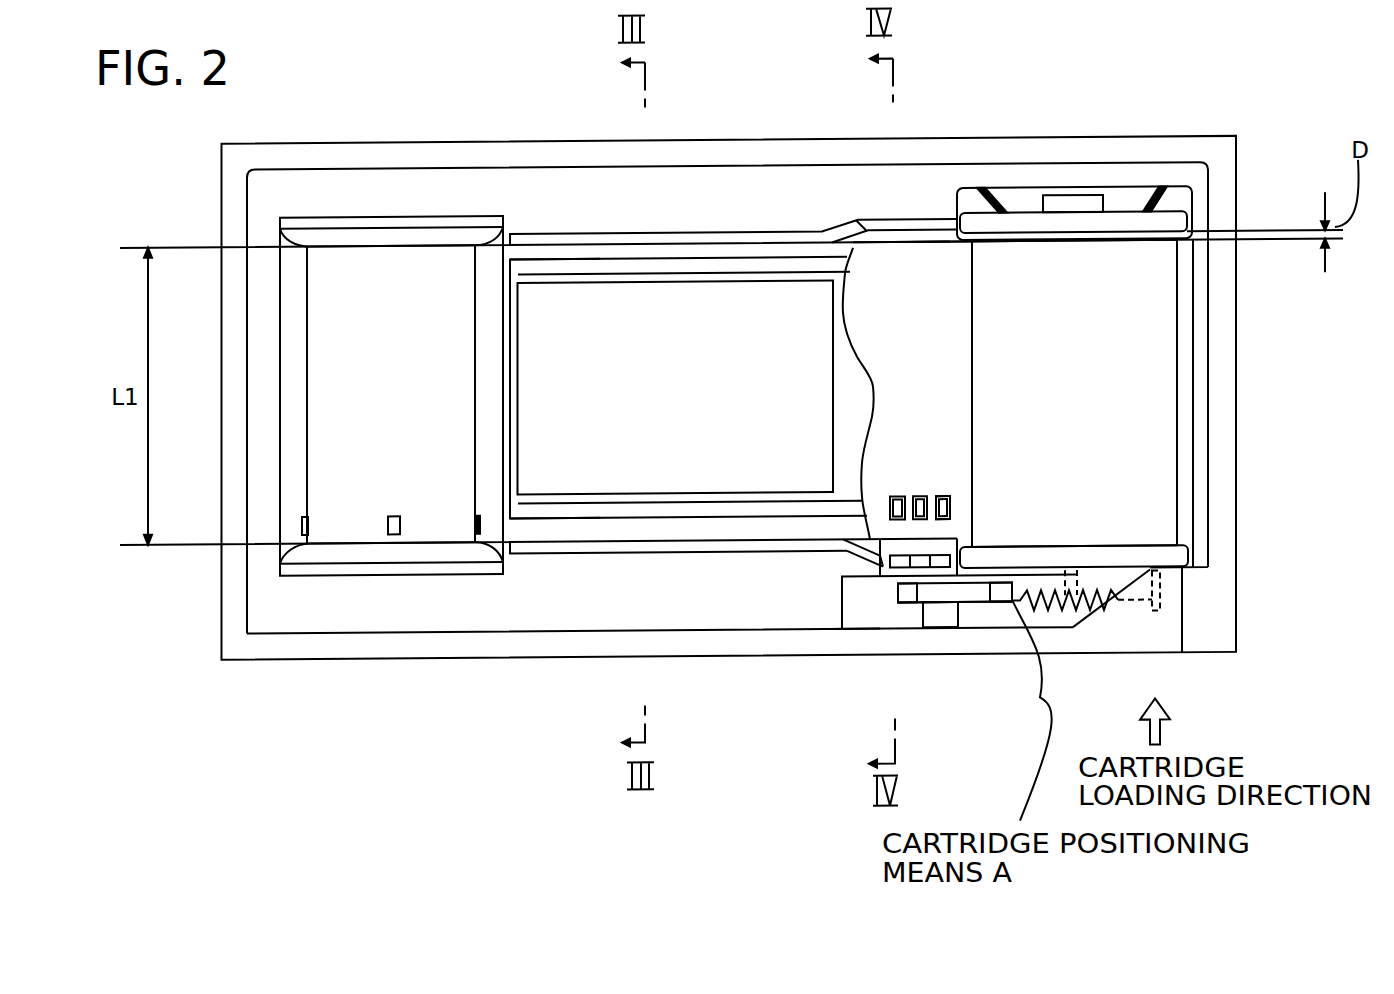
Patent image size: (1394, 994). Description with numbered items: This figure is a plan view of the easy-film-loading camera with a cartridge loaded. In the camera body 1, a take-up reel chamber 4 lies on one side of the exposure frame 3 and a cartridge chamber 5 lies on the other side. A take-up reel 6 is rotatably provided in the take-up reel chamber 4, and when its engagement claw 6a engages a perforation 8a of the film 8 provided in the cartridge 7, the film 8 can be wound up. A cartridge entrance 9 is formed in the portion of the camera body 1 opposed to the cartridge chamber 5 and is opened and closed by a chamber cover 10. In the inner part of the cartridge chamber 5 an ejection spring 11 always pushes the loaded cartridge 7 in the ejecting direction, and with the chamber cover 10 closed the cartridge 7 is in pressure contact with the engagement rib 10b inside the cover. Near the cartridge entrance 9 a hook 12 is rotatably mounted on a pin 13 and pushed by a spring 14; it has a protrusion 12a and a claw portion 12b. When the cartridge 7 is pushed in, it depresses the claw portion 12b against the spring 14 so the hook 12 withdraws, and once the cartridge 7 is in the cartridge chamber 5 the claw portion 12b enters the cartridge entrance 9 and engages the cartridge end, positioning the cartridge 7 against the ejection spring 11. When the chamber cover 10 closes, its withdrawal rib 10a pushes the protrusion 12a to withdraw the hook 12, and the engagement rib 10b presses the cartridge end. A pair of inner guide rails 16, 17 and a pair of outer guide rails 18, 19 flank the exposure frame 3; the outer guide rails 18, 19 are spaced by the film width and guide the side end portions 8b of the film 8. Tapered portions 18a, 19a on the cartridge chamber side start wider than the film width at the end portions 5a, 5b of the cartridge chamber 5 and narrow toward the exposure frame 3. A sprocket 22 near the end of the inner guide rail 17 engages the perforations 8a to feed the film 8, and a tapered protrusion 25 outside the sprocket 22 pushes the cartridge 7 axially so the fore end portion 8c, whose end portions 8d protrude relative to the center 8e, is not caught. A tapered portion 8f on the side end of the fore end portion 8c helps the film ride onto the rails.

The camera body 1 is at (1227, 338).
The exposure frame 3 is at (702, 297).
The take-up reel chamber 4 is at (293, 457).
The cartridge chamber 5 is at (1127, 195).
The end portion of the cartridge chamber 5a is at (984, 190).
The end portion of the cartridge chamber 5b is at (1007, 604).
The take-up reel 6 is at (325, 322).
The engagement claw 6a is at (303, 522).
The cartridge 7 is at (1162, 460).
The film 8 is at (930, 343).
The perforation 8a is at (940, 497).
The side end portion 8b is at (930, 242).
The fore end portion 8c is at (947, 305).
The end portions 8d is at (815, 270).
The center 8e is at (858, 379).
The tapered portion 8f is at (858, 244).
The cartridge entrance 9 is at (852, 628).
The chamber cover 10 is at (1163, 633).
The withdrawal rib 10a is at (947, 629).
The engagement rib 10b is at (1074, 575).
The ejection spring 11 is at (1195, 215).
The hook 12 is at (975, 586).
The protrusion 12a is at (918, 586).
The claw portion 12b is at (1003, 586).
The pin 13 is at (912, 604).
The spring 14 is at (1090, 612).
The inner guide rail 16 is at (543, 258).
The inner guide rail 17 is at (533, 510).
The outer guide rail 18 is at (680, 232).
The tapered portion 18a is at (893, 225).
The outer guide rail 19 is at (572, 548).
The tapered portion 19a is at (847, 555).
The sprocket 22 is at (917, 497).
The tapered protrusion 25 is at (890, 557).